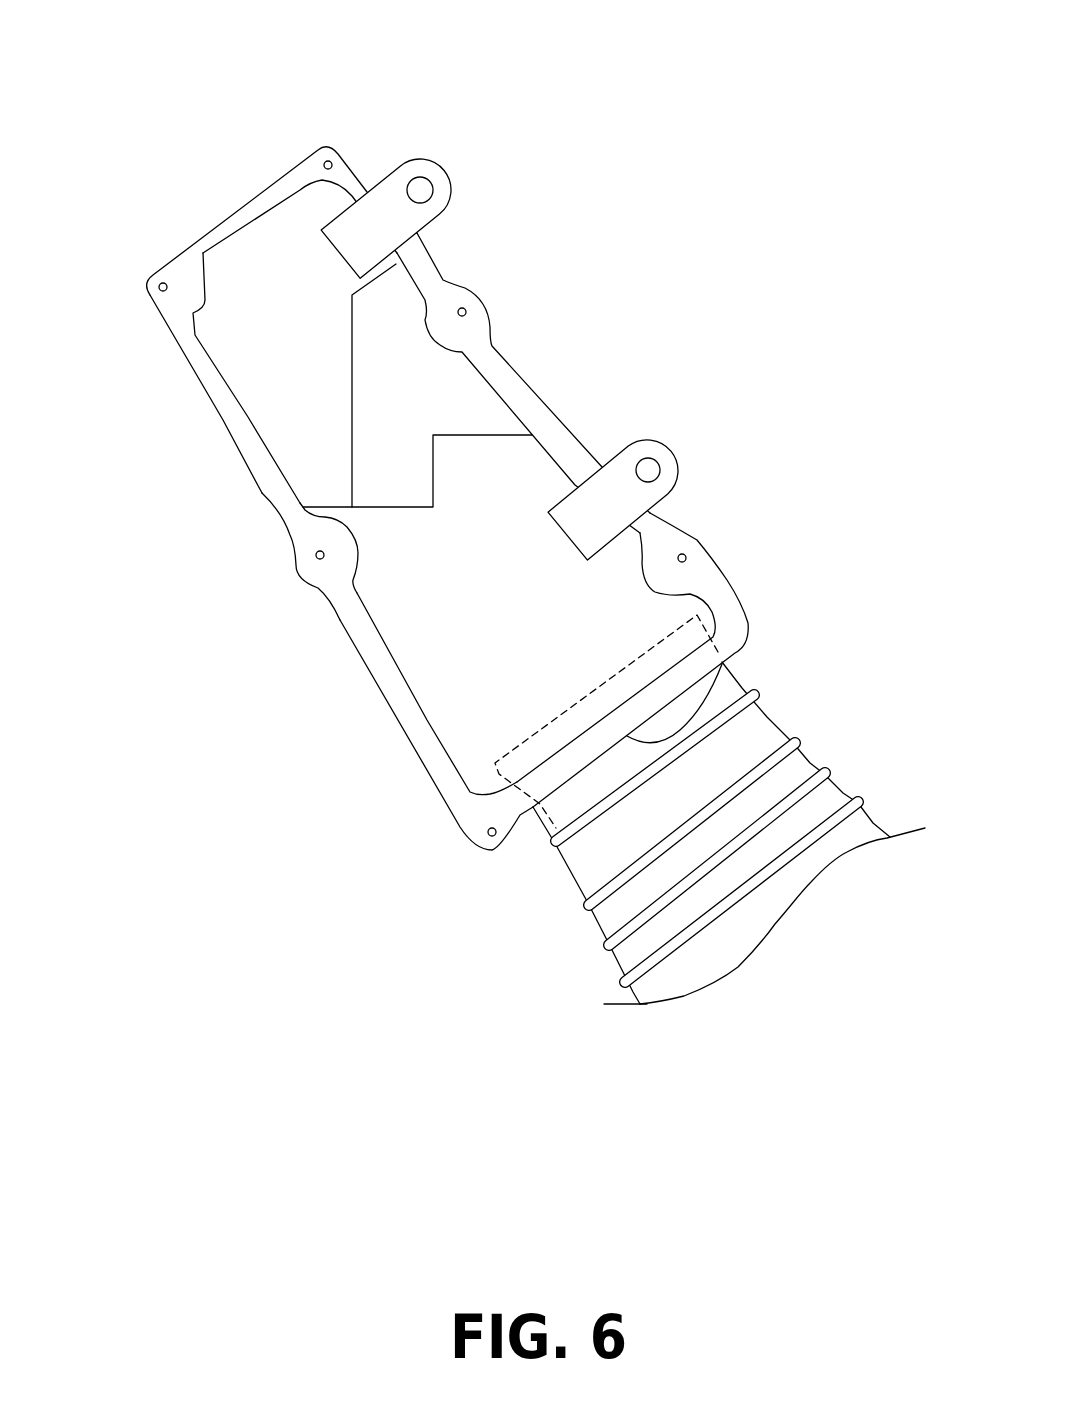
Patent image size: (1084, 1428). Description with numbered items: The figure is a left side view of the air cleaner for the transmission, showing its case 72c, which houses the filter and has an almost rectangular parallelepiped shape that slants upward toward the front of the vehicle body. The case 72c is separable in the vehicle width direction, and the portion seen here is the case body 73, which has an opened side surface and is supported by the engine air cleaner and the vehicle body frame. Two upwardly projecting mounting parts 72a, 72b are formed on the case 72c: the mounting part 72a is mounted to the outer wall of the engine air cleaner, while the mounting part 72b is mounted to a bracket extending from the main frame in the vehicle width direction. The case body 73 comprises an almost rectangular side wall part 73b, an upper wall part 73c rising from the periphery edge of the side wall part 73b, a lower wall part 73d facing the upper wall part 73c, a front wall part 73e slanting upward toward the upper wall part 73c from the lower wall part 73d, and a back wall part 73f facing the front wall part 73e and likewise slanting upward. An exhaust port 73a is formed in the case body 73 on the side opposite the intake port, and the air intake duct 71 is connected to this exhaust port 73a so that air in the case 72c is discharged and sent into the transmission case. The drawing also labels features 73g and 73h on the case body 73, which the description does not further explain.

The air intake duct 71 is at (755, 735).
The mounting part 72a is at (437, 173).
The mounting part 72b is at (662, 450).
The case 72c is at (554, 289).
The case body 73 is at (476, 481).
The exhaust port 73a is at (537, 837).
The side wall part 73b is at (430, 408).
The upper wall part 73c is at (233, 210).
The lower wall part 73d is at (712, 676).
The front wall part 73e is at (265, 495).
The back wall part 73f is at (533, 397).
The lower opening 73g is at (442, 683).
The flat plate portion 73h is at (260, 373).